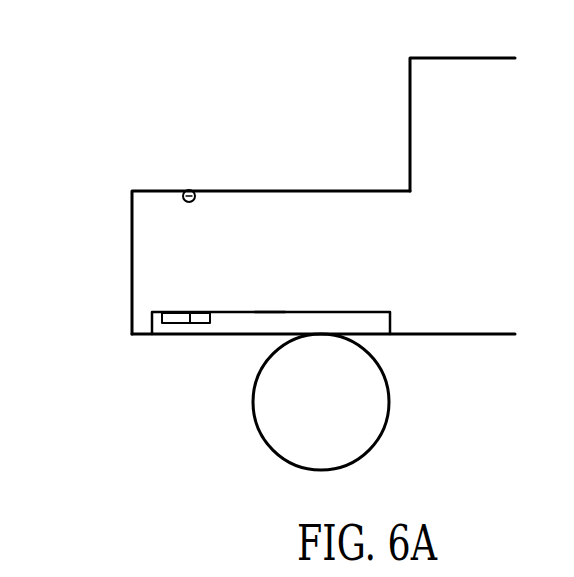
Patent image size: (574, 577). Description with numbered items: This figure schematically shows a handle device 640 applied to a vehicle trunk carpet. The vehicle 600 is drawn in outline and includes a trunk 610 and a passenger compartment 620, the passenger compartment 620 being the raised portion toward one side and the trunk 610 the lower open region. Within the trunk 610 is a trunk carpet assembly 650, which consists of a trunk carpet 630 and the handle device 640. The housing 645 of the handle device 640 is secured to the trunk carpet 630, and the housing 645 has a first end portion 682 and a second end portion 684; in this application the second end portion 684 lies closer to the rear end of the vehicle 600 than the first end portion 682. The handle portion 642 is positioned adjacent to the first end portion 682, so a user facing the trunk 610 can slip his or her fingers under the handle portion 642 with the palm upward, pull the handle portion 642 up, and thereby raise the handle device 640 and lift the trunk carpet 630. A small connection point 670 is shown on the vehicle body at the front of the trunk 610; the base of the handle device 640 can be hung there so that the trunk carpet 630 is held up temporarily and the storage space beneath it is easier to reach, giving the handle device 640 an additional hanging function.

The vehicle 600 is at (255, 135).
The trunk 610 is at (263, 227).
The passenger compartment 620 is at (472, 158).
The trunk carpet 630 is at (230, 325).
The handle device 640 is at (185, 310).
The handle portion 642 is at (197, 325).
The housing 645 is at (190, 325).
The trunk carpet assembly 650 is at (270, 312).
The connection point 670 is at (184, 194).
The first end portion 682 is at (198, 312).
The second end portion 684 is at (172, 313).